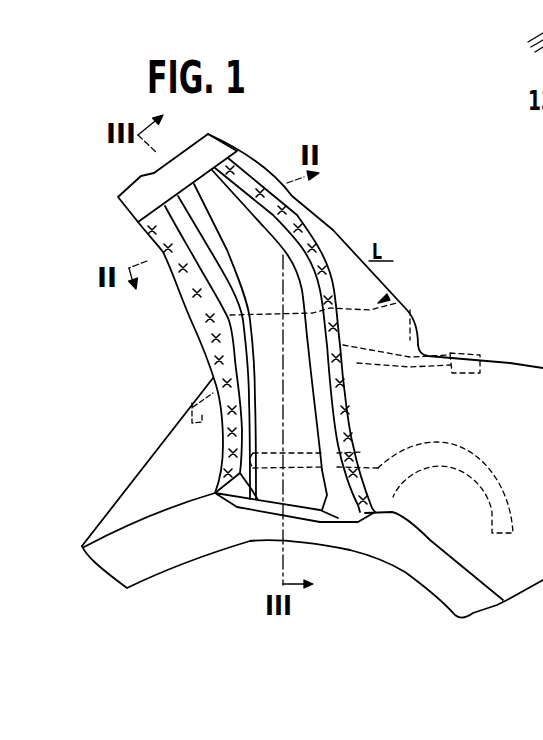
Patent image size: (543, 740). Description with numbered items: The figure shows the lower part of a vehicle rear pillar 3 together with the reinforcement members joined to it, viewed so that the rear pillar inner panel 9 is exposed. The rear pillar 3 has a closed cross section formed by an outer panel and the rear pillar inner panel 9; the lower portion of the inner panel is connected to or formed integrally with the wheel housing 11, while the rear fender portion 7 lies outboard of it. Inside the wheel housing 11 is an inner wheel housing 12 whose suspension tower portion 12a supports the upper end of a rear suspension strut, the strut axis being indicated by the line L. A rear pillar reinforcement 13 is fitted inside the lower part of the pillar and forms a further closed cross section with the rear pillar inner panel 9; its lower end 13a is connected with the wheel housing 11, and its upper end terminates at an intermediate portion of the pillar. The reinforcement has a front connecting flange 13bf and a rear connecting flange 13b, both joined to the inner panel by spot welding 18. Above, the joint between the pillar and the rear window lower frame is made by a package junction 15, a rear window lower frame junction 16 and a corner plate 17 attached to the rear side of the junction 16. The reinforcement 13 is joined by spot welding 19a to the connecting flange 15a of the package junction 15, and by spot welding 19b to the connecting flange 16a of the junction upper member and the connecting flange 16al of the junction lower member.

The rear pillar 3 is at (332, 226).
The rear fender portion 7 is at (508, 362).
The rear pillar inner panel 9 is at (313, 239).
The wheel housing 11 is at (398, 558).
The inner wheel housing 12 is at (217, 477).
The suspension tower portion 12a is at (283, 455).
The rear pillar reinforcement 13 is at (207, 336).
The lower end of rear pillar reinforcement 13a is at (323, 523).
The rear connecting flange 13b is at (247, 182).
The front connecting flange 13bf is at (168, 262).
The package junction 15 is at (213, 358).
The connecting flange of package junction 15a is at (193, 407).
The rear window lower frame junction 16 is at (330, 296).
The connecting flange of rear window lower frame junction upper member 16a is at (327, 290).
The connecting flange of rear window lower frame junction lower member 16al is at (453, 373).
The corner plate 17 is at (420, 340).
The spot welding 18 is at (305, 215).
The spot welding 19a is at (213, 367).
The spot welding 19b is at (330, 330).